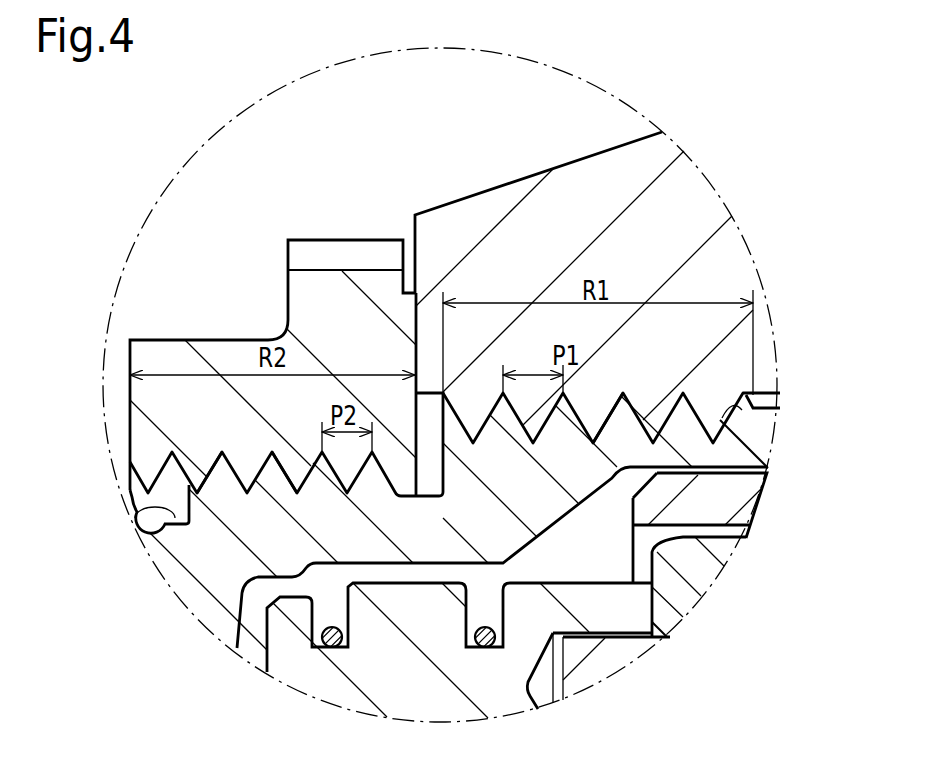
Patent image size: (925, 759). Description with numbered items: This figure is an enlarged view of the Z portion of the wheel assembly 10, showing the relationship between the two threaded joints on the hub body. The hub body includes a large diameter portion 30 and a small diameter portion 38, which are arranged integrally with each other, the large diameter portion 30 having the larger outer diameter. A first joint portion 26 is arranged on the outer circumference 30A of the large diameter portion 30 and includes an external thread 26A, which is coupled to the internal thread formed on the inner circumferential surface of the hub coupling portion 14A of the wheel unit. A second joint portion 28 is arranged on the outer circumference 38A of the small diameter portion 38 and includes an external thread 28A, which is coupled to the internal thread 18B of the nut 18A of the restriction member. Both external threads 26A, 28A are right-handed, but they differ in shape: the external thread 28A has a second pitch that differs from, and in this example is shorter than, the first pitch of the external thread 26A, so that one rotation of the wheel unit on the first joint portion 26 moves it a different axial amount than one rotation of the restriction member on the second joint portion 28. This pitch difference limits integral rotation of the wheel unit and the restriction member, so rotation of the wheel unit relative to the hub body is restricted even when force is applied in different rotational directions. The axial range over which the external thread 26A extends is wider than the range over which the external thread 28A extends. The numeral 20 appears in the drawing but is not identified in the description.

The wheel assembly 10 is at (728, 83).
The hub coupling portion 14A is at (472, 196).
The nut 18A is at (220, 338).
The internal thread 18B is at (278, 475).
The second member 20 is at (815, 333).
The first joint portion 26 is at (658, 370).
The external thread 26A is at (608, 422).
The second joint portion 28 is at (192, 447).
The external thread 28A is at (210, 458).
The large diameter portion 30 is at (745, 407).
The outer circumference of the large diameter portion 30A is at (767, 393).
The small diameter portion 38 is at (135, 521).
The outer circumference of the small diameter portion 38A is at (423, 492).
The Z portion Z is at (567, 72).